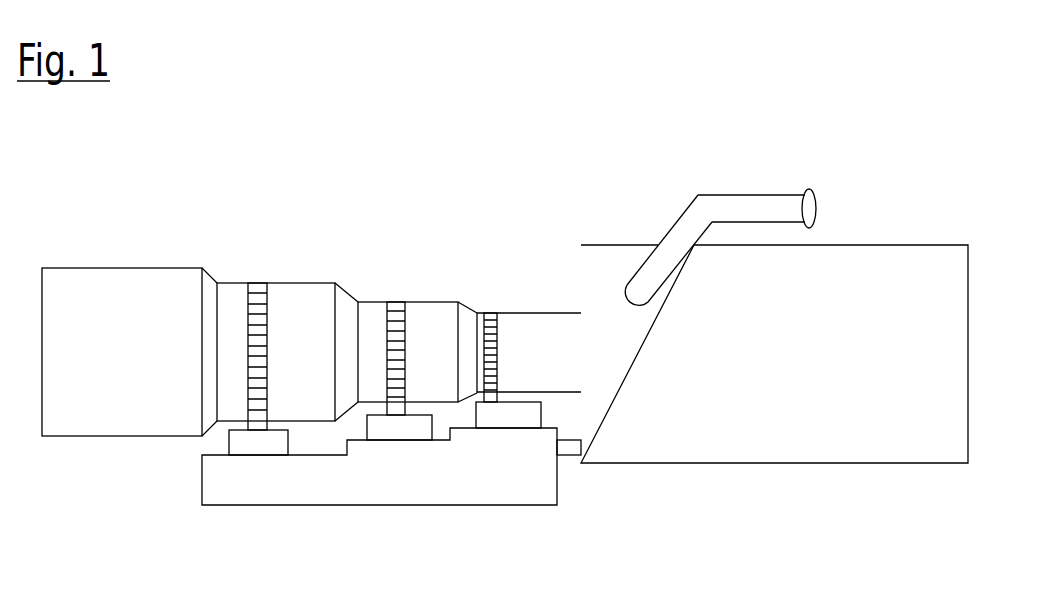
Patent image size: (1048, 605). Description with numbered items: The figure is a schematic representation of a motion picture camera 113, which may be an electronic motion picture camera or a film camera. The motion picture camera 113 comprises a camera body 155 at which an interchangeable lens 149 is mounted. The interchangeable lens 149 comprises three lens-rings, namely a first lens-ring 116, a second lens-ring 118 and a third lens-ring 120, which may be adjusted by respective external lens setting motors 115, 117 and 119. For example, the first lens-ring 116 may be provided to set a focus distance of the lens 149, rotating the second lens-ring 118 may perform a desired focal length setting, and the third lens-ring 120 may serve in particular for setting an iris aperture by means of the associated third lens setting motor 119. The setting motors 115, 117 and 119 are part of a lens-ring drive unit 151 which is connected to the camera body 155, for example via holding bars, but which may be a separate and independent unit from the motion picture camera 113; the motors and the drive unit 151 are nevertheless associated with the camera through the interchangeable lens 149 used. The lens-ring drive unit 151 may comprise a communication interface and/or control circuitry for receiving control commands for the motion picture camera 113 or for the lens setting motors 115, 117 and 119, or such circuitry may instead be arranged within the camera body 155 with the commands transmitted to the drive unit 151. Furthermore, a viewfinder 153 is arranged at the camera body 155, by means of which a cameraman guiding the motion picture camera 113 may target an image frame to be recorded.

The motion picture camera 113 is at (948, 114).
The first lens setting motor 115 is at (252, 445).
The first lens-ring 116 is at (262, 265).
The second lens setting motor 117 is at (403, 428).
The second lens-ring 118 is at (404, 282).
The third lens setting motor 119 is at (515, 418).
The third lens-ring 120 is at (496, 293).
The interchangeable lens 149 is at (401, 194).
The lens-ring drive unit 151 is at (288, 485).
The viewfinder 153 is at (748, 207).
The camera body 155 is at (790, 358).